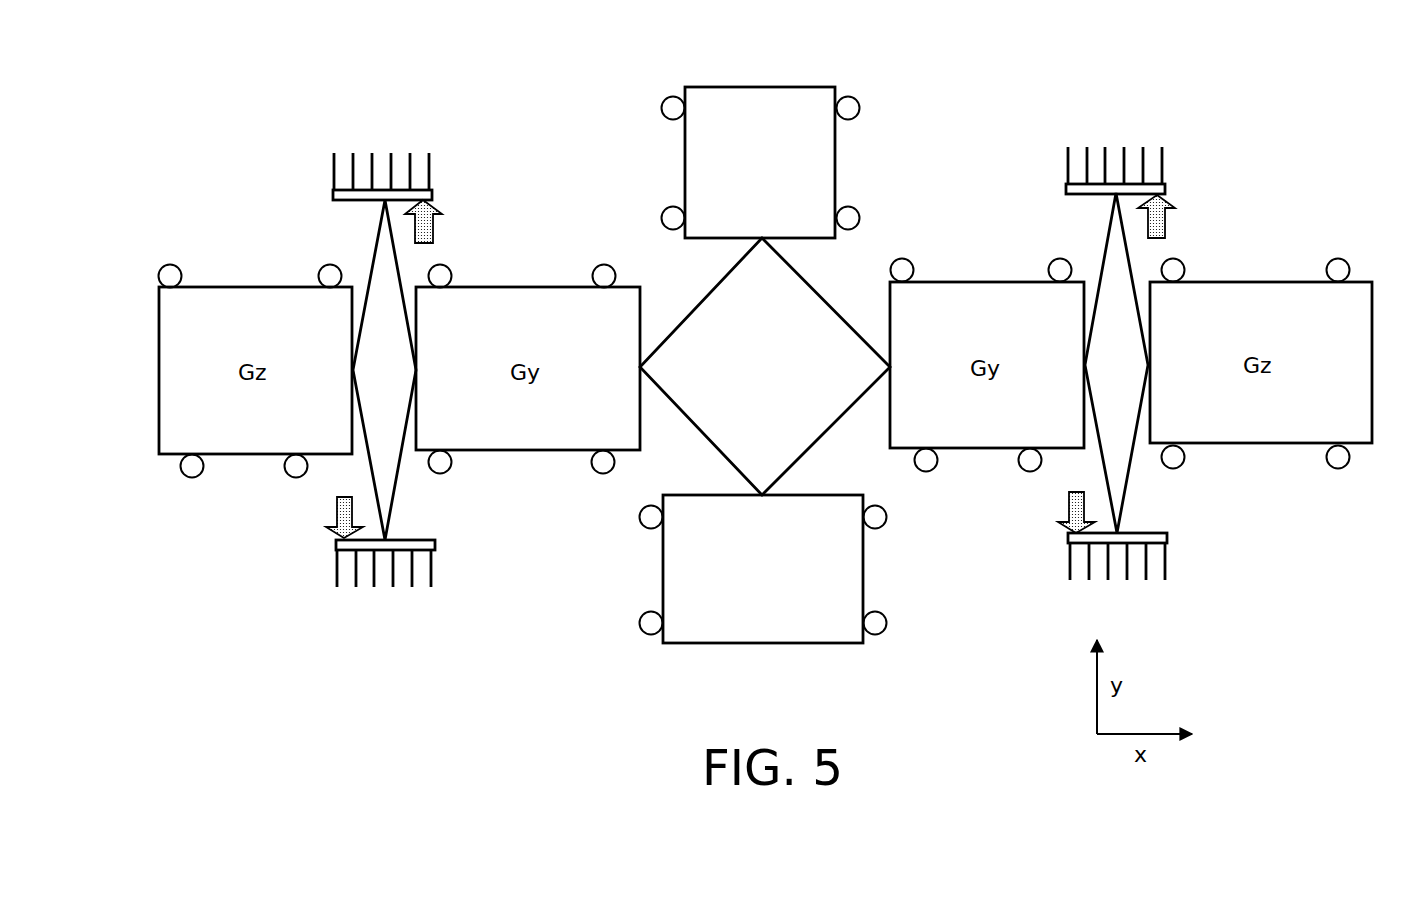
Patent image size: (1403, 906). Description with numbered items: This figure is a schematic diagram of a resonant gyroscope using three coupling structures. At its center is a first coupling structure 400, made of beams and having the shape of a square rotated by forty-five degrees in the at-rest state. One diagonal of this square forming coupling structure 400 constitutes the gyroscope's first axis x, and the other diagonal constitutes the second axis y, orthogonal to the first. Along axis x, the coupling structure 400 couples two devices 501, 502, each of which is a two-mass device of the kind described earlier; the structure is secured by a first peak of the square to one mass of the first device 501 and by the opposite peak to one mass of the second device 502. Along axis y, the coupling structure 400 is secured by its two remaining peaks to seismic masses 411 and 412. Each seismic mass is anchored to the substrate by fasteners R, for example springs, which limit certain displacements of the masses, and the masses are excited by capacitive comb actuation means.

The first coupling structure 400 is at (845, 298).
The seismic mass 411 is at (783, 107).
The seismic mass 412 is at (723, 627).
The device 501 is at (476, 210).
The device 502 is at (1243, 248).
The fasteners R is at (323, 270).